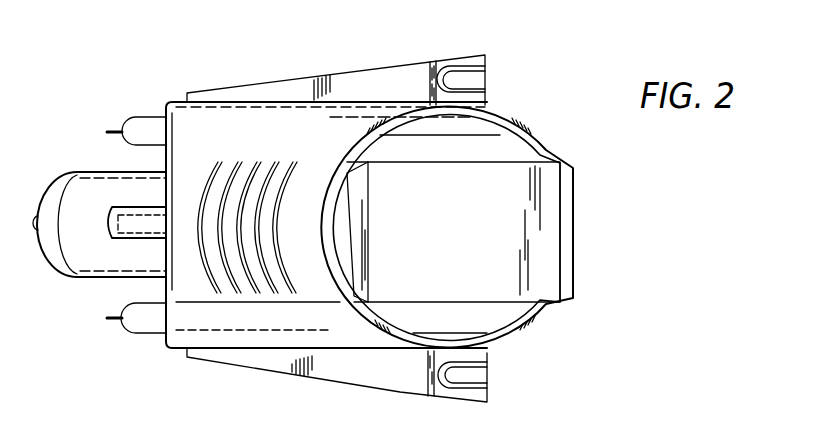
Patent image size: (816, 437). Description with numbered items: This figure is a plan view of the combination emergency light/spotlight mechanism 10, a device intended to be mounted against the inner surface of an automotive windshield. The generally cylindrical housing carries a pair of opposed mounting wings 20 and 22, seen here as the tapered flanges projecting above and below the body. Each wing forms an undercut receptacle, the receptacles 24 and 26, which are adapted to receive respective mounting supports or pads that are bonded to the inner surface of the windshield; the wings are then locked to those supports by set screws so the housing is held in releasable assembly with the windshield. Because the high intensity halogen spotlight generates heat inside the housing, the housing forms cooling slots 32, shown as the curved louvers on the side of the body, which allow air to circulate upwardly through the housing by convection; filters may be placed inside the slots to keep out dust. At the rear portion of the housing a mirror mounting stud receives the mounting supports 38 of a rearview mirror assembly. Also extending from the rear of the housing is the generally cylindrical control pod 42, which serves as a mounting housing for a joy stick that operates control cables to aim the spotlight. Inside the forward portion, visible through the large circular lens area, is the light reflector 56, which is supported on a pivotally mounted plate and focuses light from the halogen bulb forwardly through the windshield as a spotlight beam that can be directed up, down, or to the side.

The combination emergency light/spotlight mechanism 10 is at (298, 53).
The mounting wing 20 is at (388, 90).
The mounting wing 22 is at (378, 386).
The undercut receptacle 24 is at (470, 80).
The undercut receptacle 26 is at (472, 375).
The upper cooling slots 32 is at (205, 280).
The mounting supports 38 is at (128, 207).
The control pod 42 is at (90, 278).
The light reflector 56 is at (360, 232).